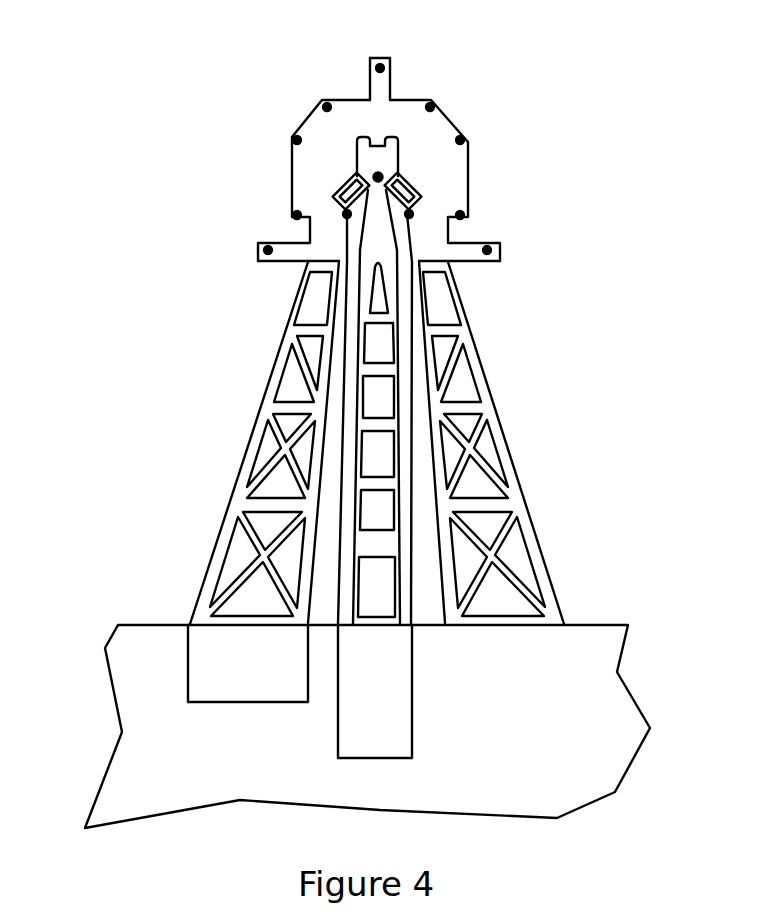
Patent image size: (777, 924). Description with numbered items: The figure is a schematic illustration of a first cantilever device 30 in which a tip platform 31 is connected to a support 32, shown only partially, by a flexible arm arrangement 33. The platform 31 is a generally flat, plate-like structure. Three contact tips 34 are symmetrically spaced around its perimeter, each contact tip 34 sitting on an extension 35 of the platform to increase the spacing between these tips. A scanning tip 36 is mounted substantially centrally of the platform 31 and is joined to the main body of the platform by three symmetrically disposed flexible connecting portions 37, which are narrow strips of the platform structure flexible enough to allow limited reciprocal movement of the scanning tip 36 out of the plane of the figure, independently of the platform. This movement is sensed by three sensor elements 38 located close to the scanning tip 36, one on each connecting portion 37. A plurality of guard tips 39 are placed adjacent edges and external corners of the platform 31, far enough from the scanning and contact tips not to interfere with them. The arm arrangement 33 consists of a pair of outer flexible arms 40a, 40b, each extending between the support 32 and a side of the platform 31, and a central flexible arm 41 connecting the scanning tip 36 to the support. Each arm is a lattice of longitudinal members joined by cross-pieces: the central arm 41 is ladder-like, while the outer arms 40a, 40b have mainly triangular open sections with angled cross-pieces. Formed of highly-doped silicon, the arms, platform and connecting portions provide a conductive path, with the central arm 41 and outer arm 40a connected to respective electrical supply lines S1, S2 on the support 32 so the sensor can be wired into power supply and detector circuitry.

The cantilever device 30 is at (114, 121).
The tip platform 31 is at (290, 155).
The support 32 is at (349, 718).
The flexible arm arrangement 33 is at (170, 437).
The contact tip 34 is at (377, 56).
The extension 35 is at (370, 80).
The scanning tip 36 is at (381, 176).
The flexible connecting portion 37 is at (385, 140).
The sensor element 38 is at (345, 170).
The guard tip 39 is at (327, 107).
The outer flexible arm 40a is at (228, 507).
The outer flexible arm 40b is at (527, 507).
The central flexible arm 41 is at (396, 433).
The electrical supply line S1 is at (377, 728).
The electrical supply line S2 is at (240, 660).